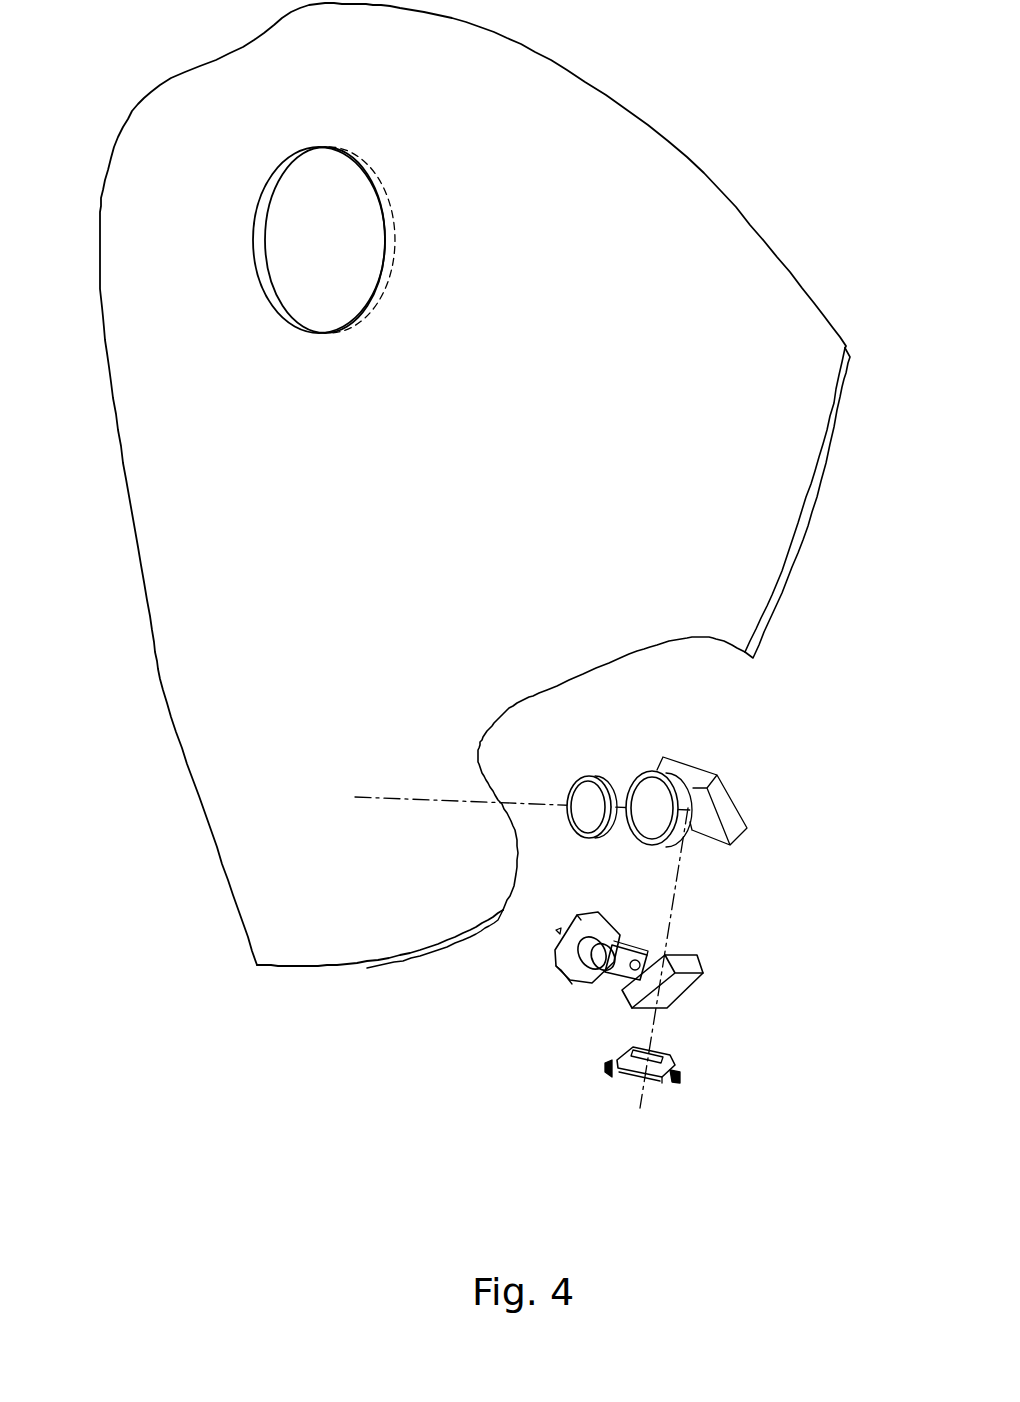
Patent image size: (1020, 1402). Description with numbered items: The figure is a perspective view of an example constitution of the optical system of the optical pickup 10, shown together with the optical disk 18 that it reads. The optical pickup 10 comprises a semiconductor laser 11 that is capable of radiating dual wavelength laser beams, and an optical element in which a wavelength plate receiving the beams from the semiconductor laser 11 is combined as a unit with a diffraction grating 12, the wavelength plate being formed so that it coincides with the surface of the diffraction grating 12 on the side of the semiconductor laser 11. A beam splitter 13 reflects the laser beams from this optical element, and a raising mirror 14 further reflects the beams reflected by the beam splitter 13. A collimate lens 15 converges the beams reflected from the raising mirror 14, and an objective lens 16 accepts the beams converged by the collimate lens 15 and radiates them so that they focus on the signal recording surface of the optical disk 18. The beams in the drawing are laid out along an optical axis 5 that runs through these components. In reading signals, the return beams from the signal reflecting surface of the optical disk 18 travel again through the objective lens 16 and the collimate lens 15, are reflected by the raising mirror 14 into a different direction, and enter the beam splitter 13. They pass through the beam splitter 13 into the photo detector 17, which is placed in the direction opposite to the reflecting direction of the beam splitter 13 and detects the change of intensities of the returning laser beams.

The optical disk 18 is at (687, 157).
The optical pickup 10 is at (698, 760).
The raising mirror 14 is at (737, 798).
The collimate lens 15 is at (637, 773).
The objective lens 16 is at (590, 776).
The axis 5 is at (683, 873).
The diffraction grating 12 is at (642, 940).
The semiconductor laser 11 is at (552, 965).
The beam splitter 13 is at (700, 957).
The photo detector 17 is at (680, 1070).